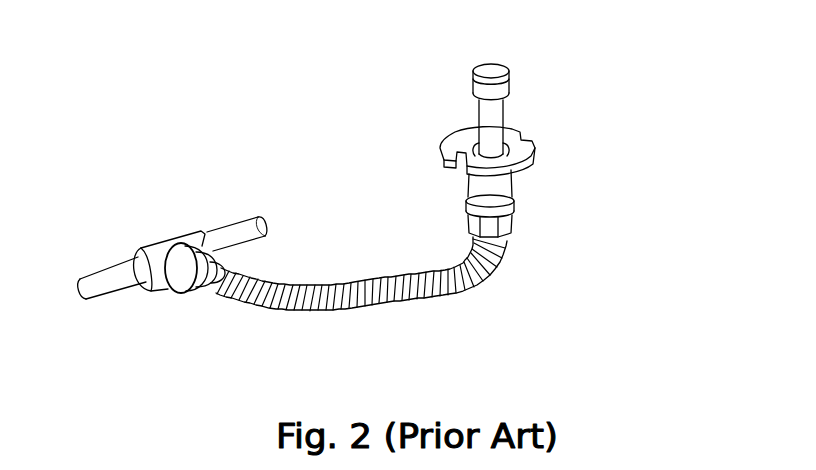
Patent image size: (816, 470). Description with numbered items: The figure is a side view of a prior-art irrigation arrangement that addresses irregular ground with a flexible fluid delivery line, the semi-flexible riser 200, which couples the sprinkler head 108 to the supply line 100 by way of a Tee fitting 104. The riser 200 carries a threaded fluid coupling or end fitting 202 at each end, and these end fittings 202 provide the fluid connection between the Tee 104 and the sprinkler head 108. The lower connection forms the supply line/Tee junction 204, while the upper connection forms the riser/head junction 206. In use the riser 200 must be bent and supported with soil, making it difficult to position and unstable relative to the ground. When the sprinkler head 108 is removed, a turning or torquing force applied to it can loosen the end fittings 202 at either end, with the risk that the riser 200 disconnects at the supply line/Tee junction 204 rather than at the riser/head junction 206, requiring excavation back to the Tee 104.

The supply line 100 is at (273, 209).
The Tee fitting 104 is at (140, 232).
The sprinkler head 108 is at (546, 120).
The semi-flexible riser 200 is at (380, 292).
The end fitting 202 is at (431, 242).
The supply line/Tee junction 204 is at (235, 311).
The riser/head junction 206 is at (570, 188).